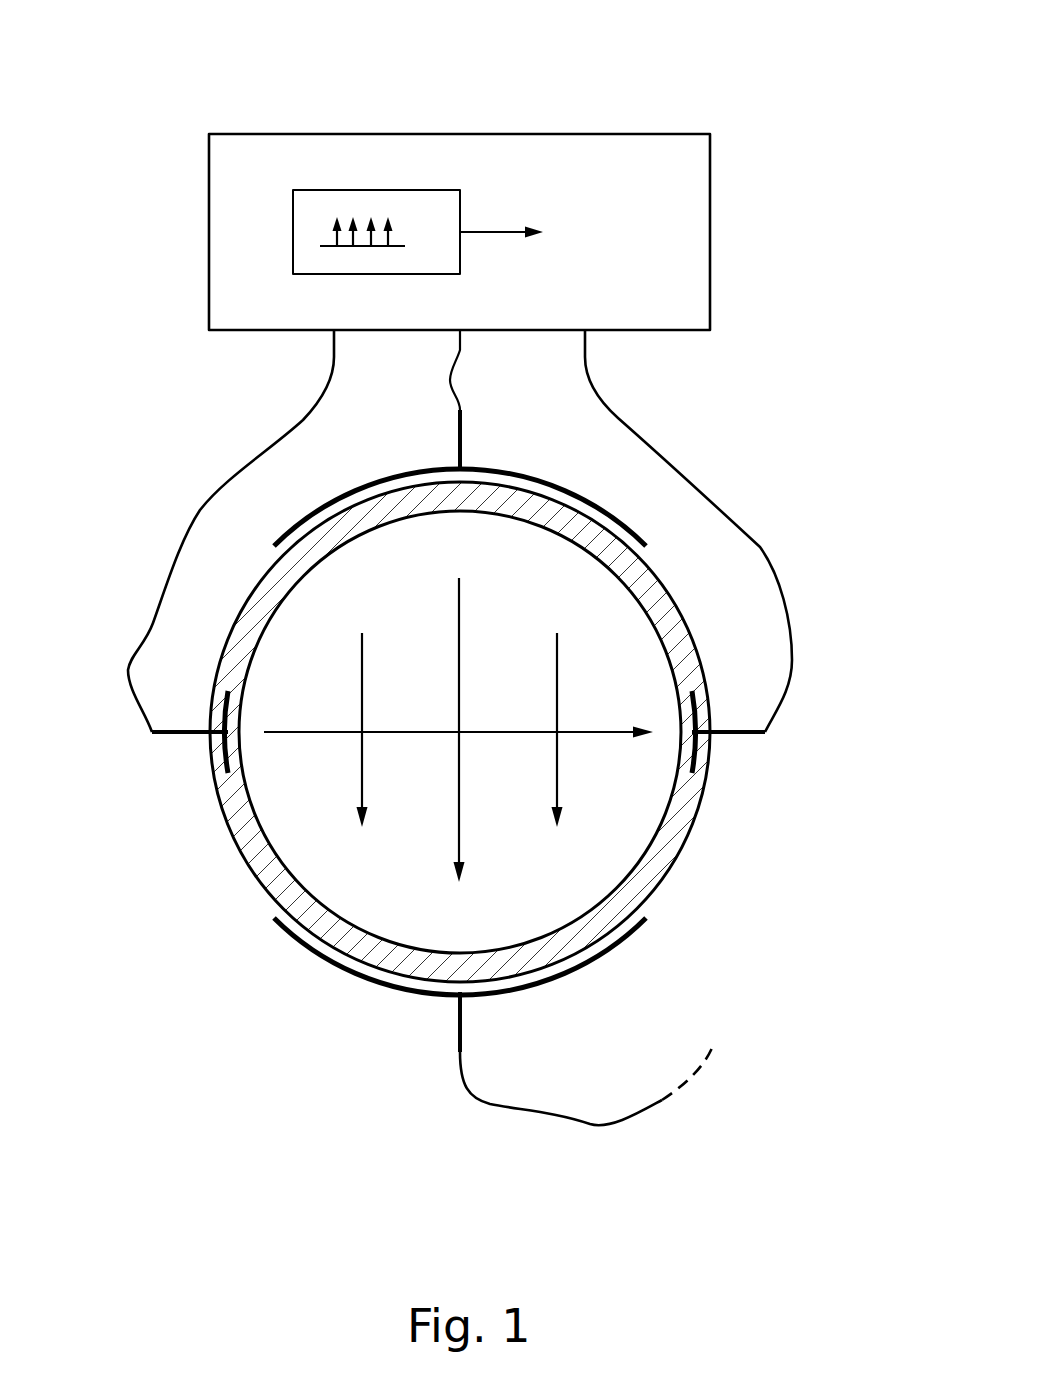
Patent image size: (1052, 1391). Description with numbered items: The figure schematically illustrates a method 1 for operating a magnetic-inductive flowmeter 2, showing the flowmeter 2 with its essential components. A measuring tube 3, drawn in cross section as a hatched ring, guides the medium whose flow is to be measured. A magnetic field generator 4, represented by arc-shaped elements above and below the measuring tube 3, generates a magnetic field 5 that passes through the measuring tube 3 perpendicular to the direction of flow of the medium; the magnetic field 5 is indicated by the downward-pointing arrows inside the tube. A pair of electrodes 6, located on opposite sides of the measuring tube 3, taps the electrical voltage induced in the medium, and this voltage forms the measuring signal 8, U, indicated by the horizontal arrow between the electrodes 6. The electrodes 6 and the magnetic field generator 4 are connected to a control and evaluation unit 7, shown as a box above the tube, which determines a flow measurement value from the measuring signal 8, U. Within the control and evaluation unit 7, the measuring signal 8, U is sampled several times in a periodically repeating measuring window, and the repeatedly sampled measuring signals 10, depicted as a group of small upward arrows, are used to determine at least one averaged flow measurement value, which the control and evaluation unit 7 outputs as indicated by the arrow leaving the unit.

The method 1 is at (422, 567).
The magnetic-inductive flowmeter 2 is at (460, 727).
The measuring tube 3 is at (685, 807).
The magnetic field generator 4 is at (628, 525).
The magnetic field 5 is at (557, 773).
The pair of electrodes 6 is at (190, 730).
The control and evaluation unit 7 is at (459, 171).
The measuring signal 8 is at (308, 732).
The repeatedly sampled measuring signals 10 is at (397, 244).